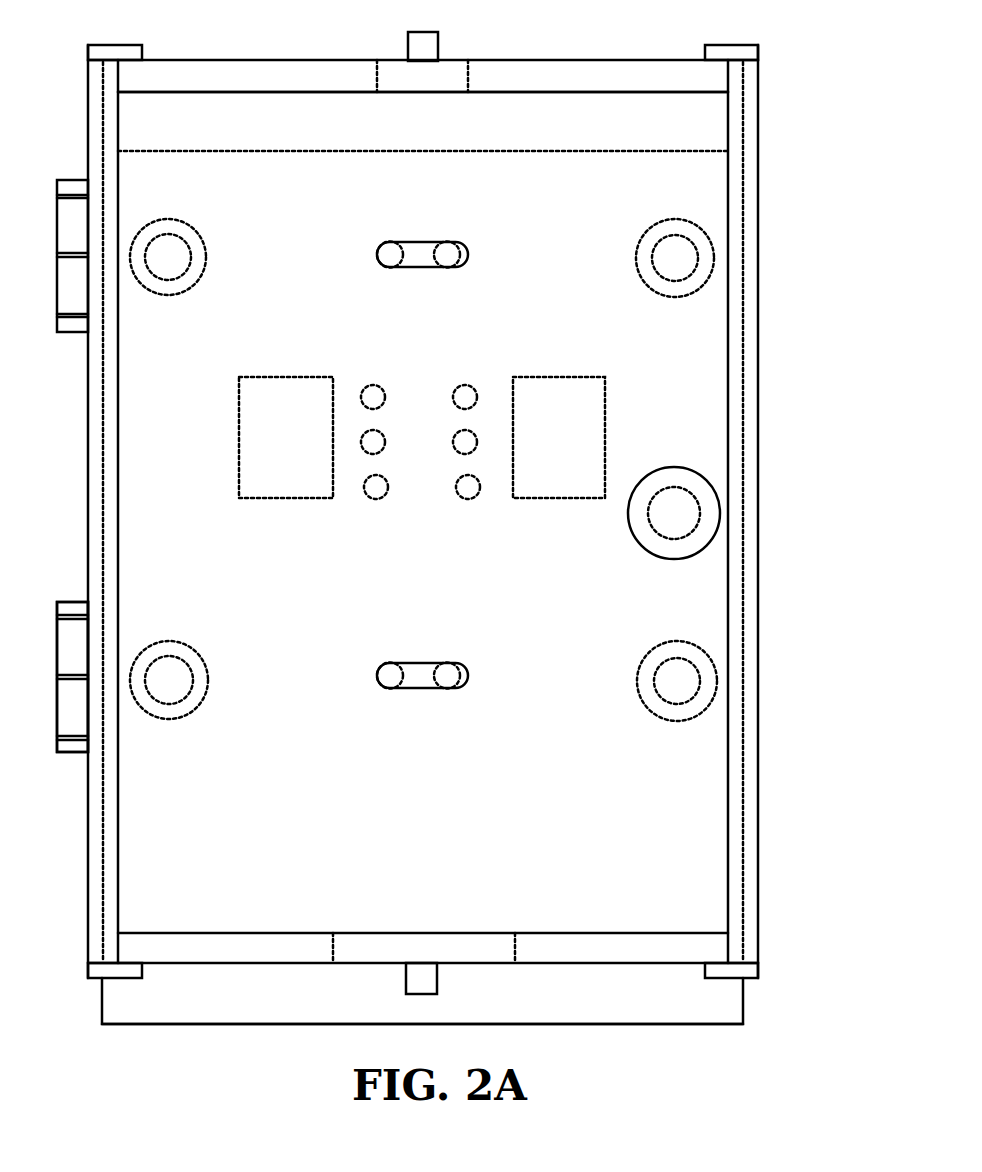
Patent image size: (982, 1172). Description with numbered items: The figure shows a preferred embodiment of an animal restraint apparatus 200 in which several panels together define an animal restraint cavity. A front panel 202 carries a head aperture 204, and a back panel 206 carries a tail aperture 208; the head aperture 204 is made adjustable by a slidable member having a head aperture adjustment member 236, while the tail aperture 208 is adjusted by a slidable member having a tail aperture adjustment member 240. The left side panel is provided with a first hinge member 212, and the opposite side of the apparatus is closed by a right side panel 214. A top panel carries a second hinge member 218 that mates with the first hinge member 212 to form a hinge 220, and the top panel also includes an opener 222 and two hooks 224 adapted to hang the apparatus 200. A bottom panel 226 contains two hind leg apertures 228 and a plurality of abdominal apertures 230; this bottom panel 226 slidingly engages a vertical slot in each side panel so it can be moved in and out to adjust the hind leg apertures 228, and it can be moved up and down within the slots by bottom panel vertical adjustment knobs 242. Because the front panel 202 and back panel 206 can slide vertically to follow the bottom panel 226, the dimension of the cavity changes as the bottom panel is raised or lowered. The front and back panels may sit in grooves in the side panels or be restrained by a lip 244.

The animal restraint apparatus 200 is at (458, 539).
The front panel 202 is at (697, 967).
The head aperture 204 is at (425, 926).
The back panel 206 is at (684, 88).
The tail aperture 208 is at (427, 99).
The first hinge member 212 is at (70, 610).
The right side panel 214 is at (745, 665).
The second hinge member 218 is at (67, 650).
The hinge 220 is at (74, 762).
The opener 222 is at (673, 560).
The hooks 224 is at (423, 243).
The bottom panel 226 is at (650, 1005).
The hind leg apertures 228 is at (301, 447).
The abdominal apertures 230 is at (468, 487).
The head aperture adjustment member 236 is at (422, 978).
The tail aperture adjustment member 240 is at (425, 47).
The bottom panel vertical adjustment knobs 242 is at (195, 677).
The lip 244 is at (115, 50).